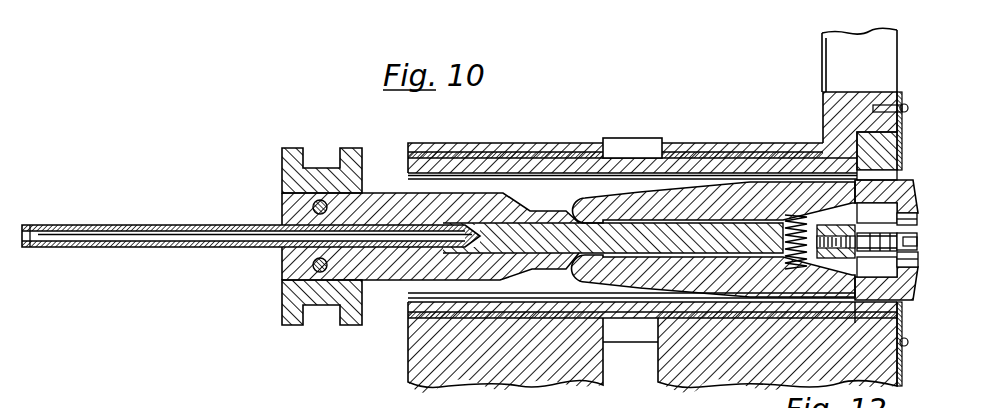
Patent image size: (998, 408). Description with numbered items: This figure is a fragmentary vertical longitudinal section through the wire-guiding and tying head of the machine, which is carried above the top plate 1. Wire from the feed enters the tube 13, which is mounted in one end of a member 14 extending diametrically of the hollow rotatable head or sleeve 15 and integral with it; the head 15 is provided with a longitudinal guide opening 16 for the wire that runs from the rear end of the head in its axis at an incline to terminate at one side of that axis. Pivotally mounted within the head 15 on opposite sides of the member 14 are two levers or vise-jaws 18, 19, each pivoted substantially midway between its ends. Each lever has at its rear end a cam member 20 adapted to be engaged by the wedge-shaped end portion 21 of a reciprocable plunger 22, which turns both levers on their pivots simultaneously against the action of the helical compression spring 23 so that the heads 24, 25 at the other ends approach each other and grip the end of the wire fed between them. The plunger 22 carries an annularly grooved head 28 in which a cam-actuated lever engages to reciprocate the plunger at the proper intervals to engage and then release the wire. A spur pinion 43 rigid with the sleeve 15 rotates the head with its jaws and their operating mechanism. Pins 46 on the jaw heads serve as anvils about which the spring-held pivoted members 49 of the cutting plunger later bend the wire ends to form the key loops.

The top plate 1 is at (497, 372).
The tube 13 is at (150, 216).
The member 14 is at (462, 282).
The hollow rotatable head or sleeve 15 is at (408, 168).
The longitudinal guide opening 16 is at (458, 270).
The lever or vise-jaw 18 is at (917, 191).
The lever or vise-jaw 19 is at (913, 292).
The cam member 20 is at (586, 270).
The wedge-shaped end portion 21 is at (572, 210).
The reciprocable plunger 22 is at (376, 180).
The helical compression spring 23 is at (809, 221).
The head 24 is at (918, 219).
The head 25 is at (918, 261).
The annularly grooved head 28 is at (282, 168).
The spur pinion 43 is at (633, 148).
The projection or pin 46 is at (940, 237).
The spring-held pivoted member 49 is at (900, 247).